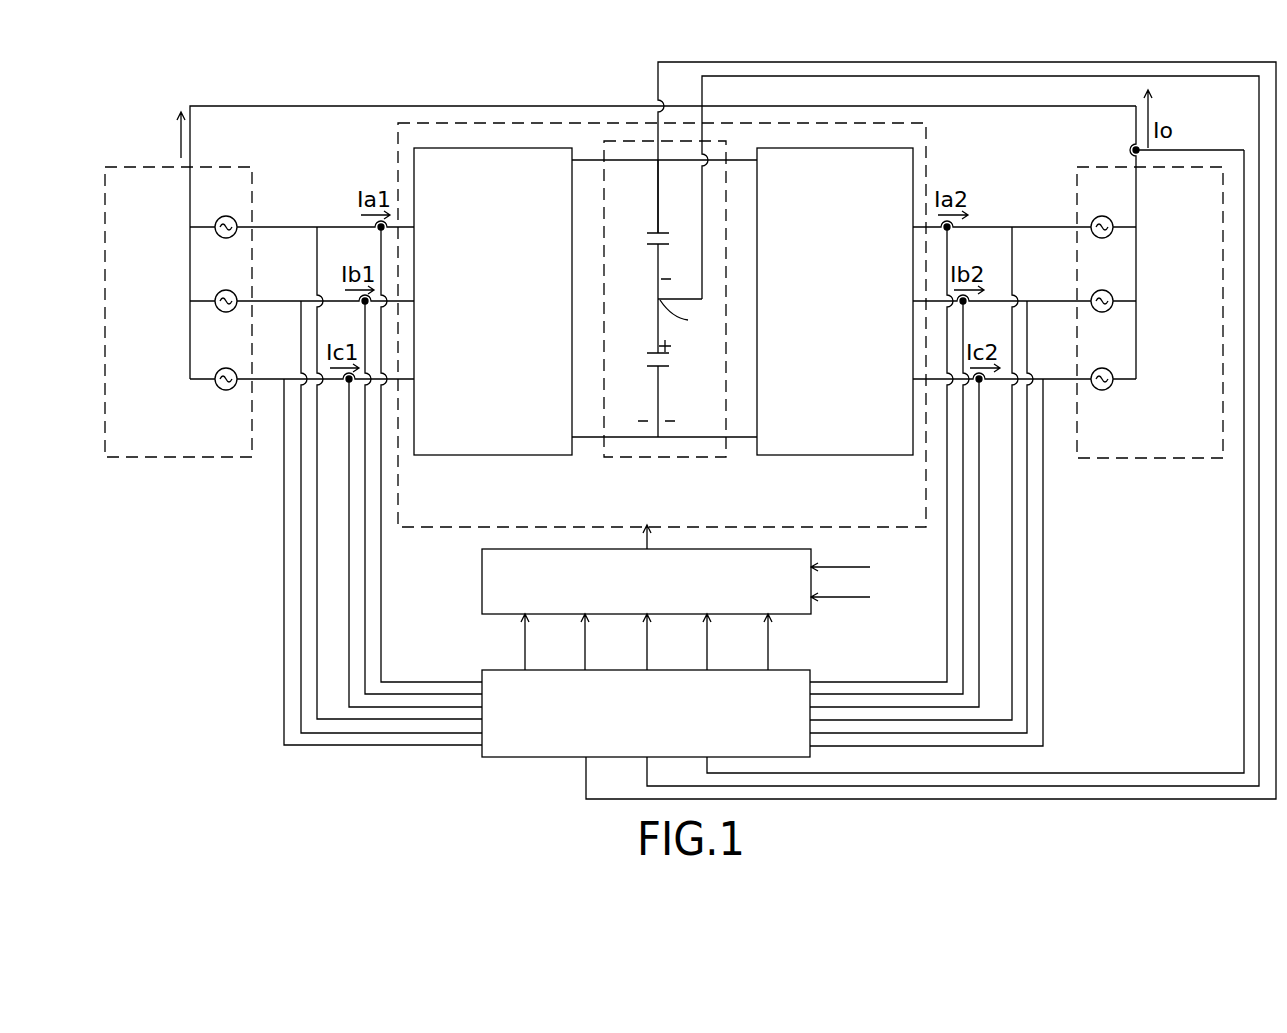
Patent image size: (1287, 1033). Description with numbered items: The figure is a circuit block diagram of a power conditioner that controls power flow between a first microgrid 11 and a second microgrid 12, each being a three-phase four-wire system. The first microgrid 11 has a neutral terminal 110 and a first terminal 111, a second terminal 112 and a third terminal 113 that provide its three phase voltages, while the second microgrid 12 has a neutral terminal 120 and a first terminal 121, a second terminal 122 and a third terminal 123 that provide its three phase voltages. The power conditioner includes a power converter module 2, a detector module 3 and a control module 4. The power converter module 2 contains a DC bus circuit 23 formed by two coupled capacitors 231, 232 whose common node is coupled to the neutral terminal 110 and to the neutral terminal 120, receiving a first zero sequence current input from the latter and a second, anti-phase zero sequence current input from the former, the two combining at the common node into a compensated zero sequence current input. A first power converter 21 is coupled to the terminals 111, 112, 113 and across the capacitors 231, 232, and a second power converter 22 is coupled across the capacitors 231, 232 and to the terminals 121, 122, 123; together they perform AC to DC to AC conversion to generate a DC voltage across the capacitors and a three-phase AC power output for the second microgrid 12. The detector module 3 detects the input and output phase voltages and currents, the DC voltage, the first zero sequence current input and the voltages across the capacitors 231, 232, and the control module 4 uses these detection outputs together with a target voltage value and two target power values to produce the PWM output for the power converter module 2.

The first microgrid 11 is at (226, 165).
The neutral terminal 110 is at (190, 245).
The first terminal 111 is at (243, 225).
The second terminal 112 is at (243, 299).
The third terminal 113 is at (243, 377).
The second microgrid 12 is at (1107, 166).
The neutral terminal 120 is at (1140, 247).
The first terminal 121 is at (1090, 224).
The second terminal 122 is at (1090, 298).
The third terminal 123 is at (1090, 376).
The power converter module 2 is at (926, 157).
The first power converter 21 is at (492, 455).
The second power converter 22 is at (837, 455).
The DC bus circuit 23 is at (633, 458).
The capacitor 231 is at (656, 232).
The capacitor 232 is at (656, 368).
The detector module 3 is at (482, 668).
The control module 4 is at (482, 581).